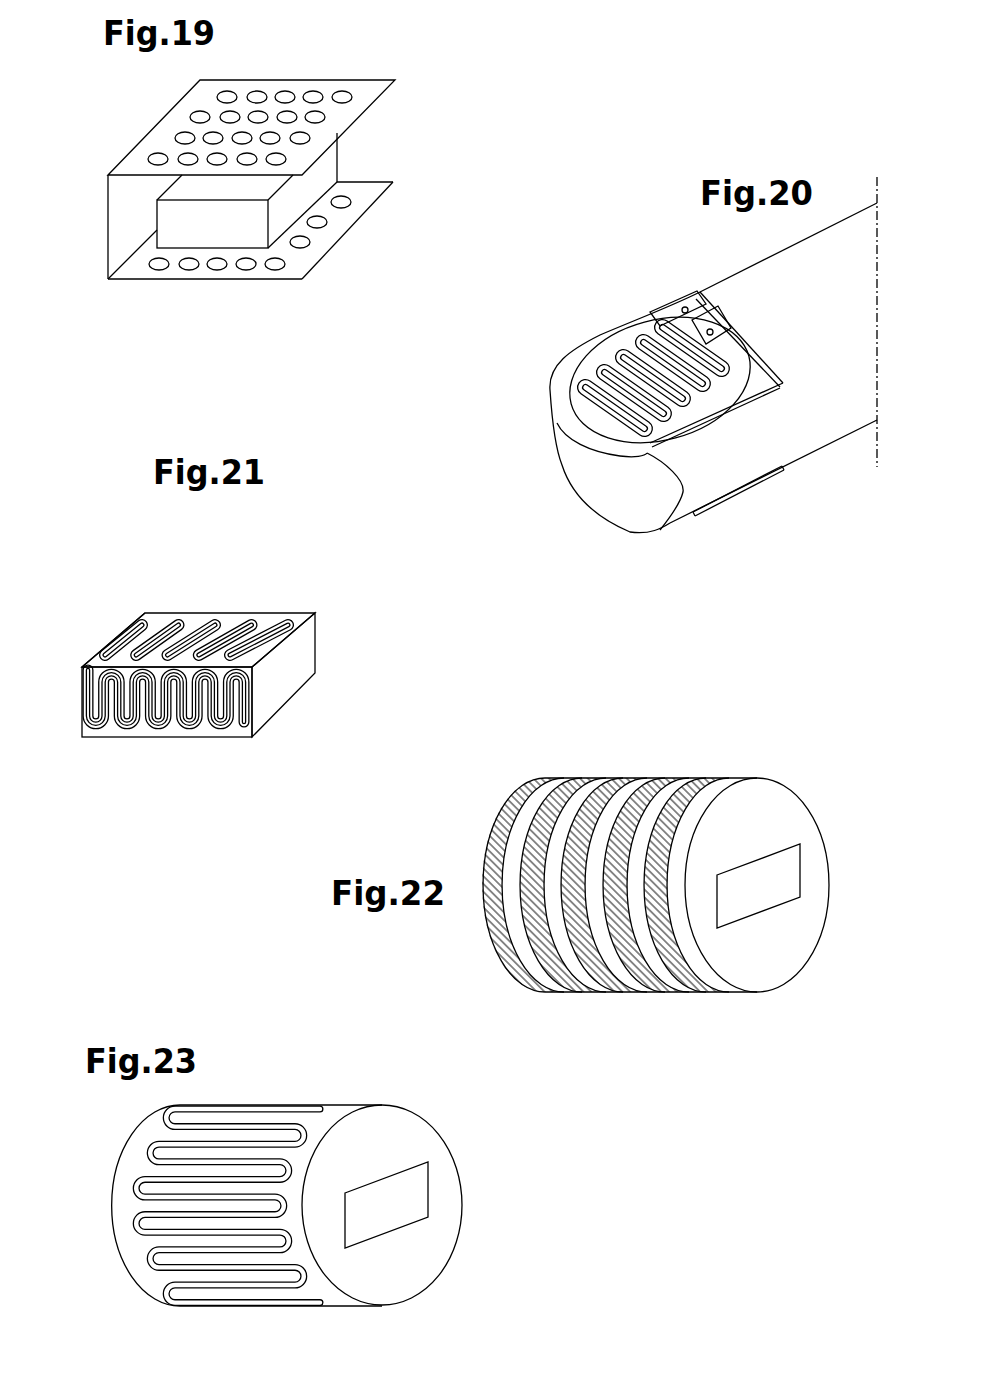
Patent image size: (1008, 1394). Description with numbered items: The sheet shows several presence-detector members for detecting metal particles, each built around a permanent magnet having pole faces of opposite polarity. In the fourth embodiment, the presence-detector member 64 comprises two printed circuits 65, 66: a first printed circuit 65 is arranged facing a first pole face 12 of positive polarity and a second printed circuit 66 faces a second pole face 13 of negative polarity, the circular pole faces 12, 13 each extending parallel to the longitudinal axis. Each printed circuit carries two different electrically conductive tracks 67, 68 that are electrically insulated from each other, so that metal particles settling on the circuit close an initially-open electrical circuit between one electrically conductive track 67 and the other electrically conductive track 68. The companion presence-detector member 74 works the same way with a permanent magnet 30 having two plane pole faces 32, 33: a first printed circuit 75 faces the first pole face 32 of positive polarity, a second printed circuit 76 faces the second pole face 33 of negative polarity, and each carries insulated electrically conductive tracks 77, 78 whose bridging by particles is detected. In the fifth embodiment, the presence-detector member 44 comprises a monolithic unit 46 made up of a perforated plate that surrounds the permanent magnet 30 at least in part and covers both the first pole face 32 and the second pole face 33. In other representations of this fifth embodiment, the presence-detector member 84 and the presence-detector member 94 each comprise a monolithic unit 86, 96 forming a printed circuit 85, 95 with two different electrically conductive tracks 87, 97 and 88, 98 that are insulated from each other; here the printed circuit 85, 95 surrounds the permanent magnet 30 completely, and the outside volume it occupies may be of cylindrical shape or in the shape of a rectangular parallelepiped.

In FIG. 20, the first pole face 12 is at (680, 385).
In FIG. 20, the second pole face 13 is at (717, 396).
In FIG. 19, the permanent magnet 30 is at (289, 235).
In FIG. 21, the permanent magnet 30 is at (332, 684).
In FIG. 22, the permanent magnet 30 is at (811, 872).
In FIG. 23, the permanent magnet 30 is at (431, 1210).
In FIG. 19, the first pole face 32 is at (253, 190).
In FIG. 21, the first pole face 32 is at (307, 640).
In FIG. 22, the first pole face 32 is at (781, 852).
In FIG. 23, the first pole face 32 is at (408, 1165).
In FIG. 19, the second pole face 33 is at (257, 252).
In FIG. 21, the second pole face 33 is at (307, 670).
In FIG. 22, the second pole face 33 is at (794, 900).
In FIG. 23, the second pole face 33 is at (417, 1222).
In FIG. 19, the presence-detector member 44 is at (226, 179).
In FIG. 19, the monolithic unit 46 is at (107, 176).
In FIG. 20, the presence-detector member 64 is at (704, 349).
In FIG. 20, the first printed circuit 65 is at (760, 377).
In FIG. 20, the second printed circuit 66 is at (760, 490).
In FIG. 20, the electrically conductive track 67 is at (727, 343).
In FIG. 20, the electrically conductive track 68 is at (673, 317).
In FIG. 21, the presence-detector member 74 is at (221, 668).
In FIG. 21, the first printed circuit 75 is at (97, 660).
In FIG. 21, the second printed circuit 76 is at (173, 745).
In FIG. 21, the electrically conductive track 77 is at (153, 653).
In FIG. 21, the electrically conductive track 78 is at (221, 676).
In FIG. 22, the presence-detector member 84 is at (694, 888).
In FIG. 22, the printed circuit 85 is at (708, 981).
In FIG. 22, the monolithic unit 86 is at (606, 1006).
In FIG. 22, the electrically conductive track 87 is at (708, 787).
In FIG. 22, the electrically conductive track 88 is at (673, 798).
In FIG. 23, the presence-detector member 94 is at (363, 1104).
In FIG. 23, the printed circuit 95 is at (220, 1278).
In FIG. 23, the monolithic unit 96 is at (275, 1203).
In FIG. 23, the electrically conductive track 97 is at (333, 1300).
In FIG. 23, the electrically conductive track 98 is at (130, 1247).